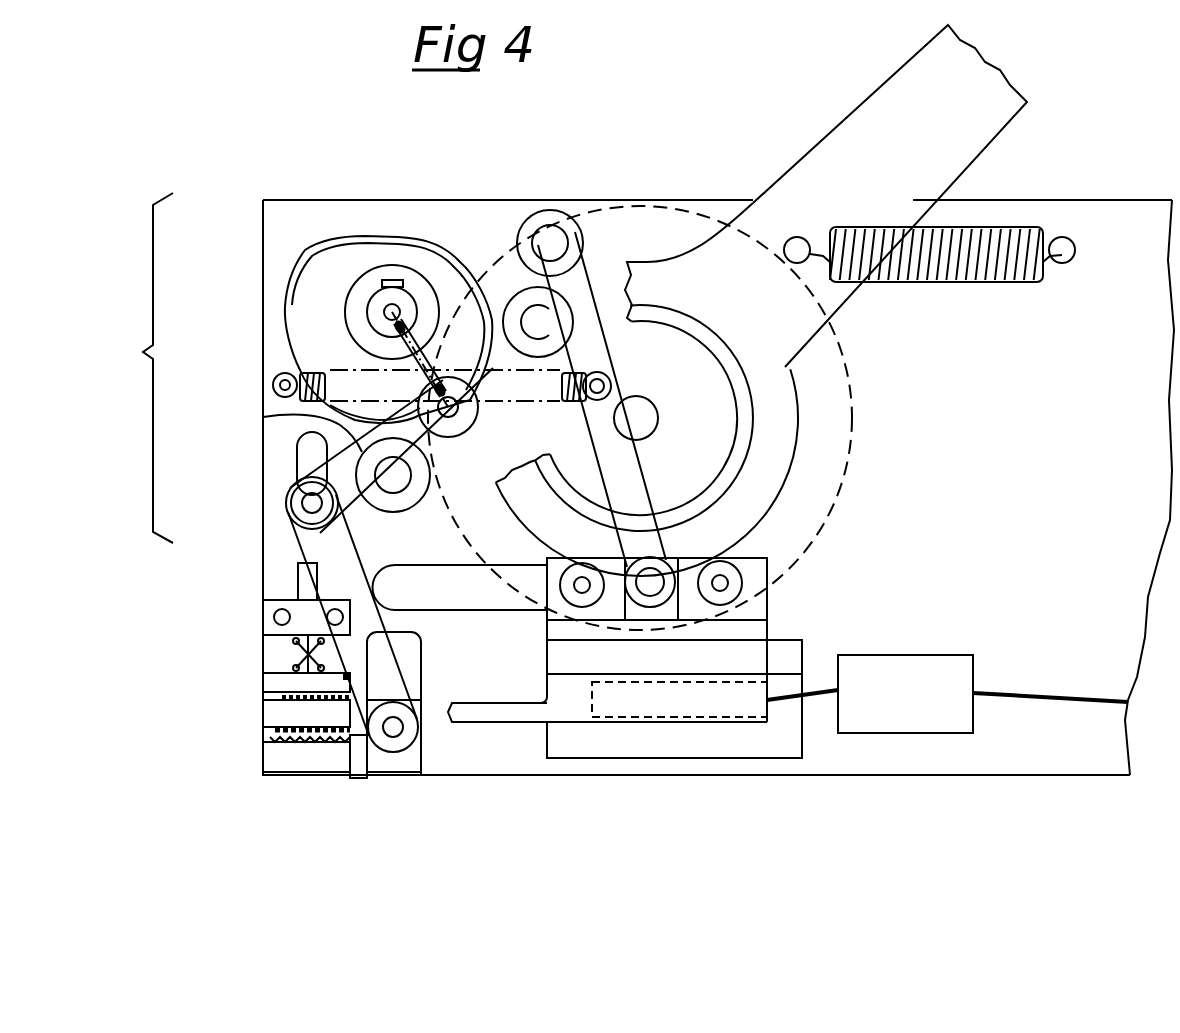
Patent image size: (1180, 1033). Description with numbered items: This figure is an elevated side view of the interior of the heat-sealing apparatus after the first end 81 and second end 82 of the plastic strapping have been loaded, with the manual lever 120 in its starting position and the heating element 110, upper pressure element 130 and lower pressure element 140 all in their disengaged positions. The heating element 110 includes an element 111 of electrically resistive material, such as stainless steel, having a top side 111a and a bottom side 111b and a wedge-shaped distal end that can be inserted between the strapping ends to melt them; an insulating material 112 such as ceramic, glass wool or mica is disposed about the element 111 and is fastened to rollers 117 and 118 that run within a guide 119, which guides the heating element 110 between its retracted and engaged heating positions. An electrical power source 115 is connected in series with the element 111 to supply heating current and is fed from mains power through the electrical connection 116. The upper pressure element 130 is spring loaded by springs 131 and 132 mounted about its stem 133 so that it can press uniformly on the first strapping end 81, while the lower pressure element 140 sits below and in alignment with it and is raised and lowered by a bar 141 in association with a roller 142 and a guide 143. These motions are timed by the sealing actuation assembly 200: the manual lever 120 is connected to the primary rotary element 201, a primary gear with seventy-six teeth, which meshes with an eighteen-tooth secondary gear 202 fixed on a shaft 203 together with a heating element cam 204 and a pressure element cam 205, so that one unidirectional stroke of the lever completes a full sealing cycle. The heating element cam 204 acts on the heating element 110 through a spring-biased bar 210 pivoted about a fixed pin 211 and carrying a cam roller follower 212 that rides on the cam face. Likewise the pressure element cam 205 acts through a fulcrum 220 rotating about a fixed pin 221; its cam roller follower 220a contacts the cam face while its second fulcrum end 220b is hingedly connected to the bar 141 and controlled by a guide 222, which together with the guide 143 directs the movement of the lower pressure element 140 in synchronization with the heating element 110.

The sealing actuation assembly 200 is at (129, 368).
The primary rotary element 201 is at (858, 373).
The secondary gear 202 is at (410, 265).
The shaft 203 is at (385, 310).
The heating element cam 204 is at (360, 236).
The pressure element cam 205 is at (323, 258).
The bar 210 is at (588, 285).
The fixed pin 211 is at (540, 208).
The cam roller follower 212 is at (503, 296).
The fulcrum 220 is at (263, 417).
The cam roller follower 220a is at (478, 414).
The second fulcrum end 220b is at (290, 497).
The fixed pin 221 is at (405, 473).
The guide 222 is at (303, 449).
The manual lever 120 is at (887, 84).
The heating element 110 is at (800, 628).
The element 111 is at (467, 718).
The top side 111a is at (486, 702).
The bottom side 111b is at (487, 722).
The insulating material 112 is at (793, 743).
The electrical power source 115 is at (947, 655).
The electrical connection 116 is at (1087, 703).
The roller 117 is at (727, 563).
The roller 118 is at (556, 583).
The guide 119 is at (447, 563).
The upper pressure element 130 is at (270, 678).
The spring 131 is at (298, 653).
The spring 132 is at (268, 697).
The stem 133 is at (303, 632).
The lower pressure element 140 is at (300, 763).
The bar 141 is at (305, 541).
The roller 142 is at (398, 750).
The guide 143 is at (422, 650).
The first end 81 is at (265, 728).
The second end 82 is at (266, 738).